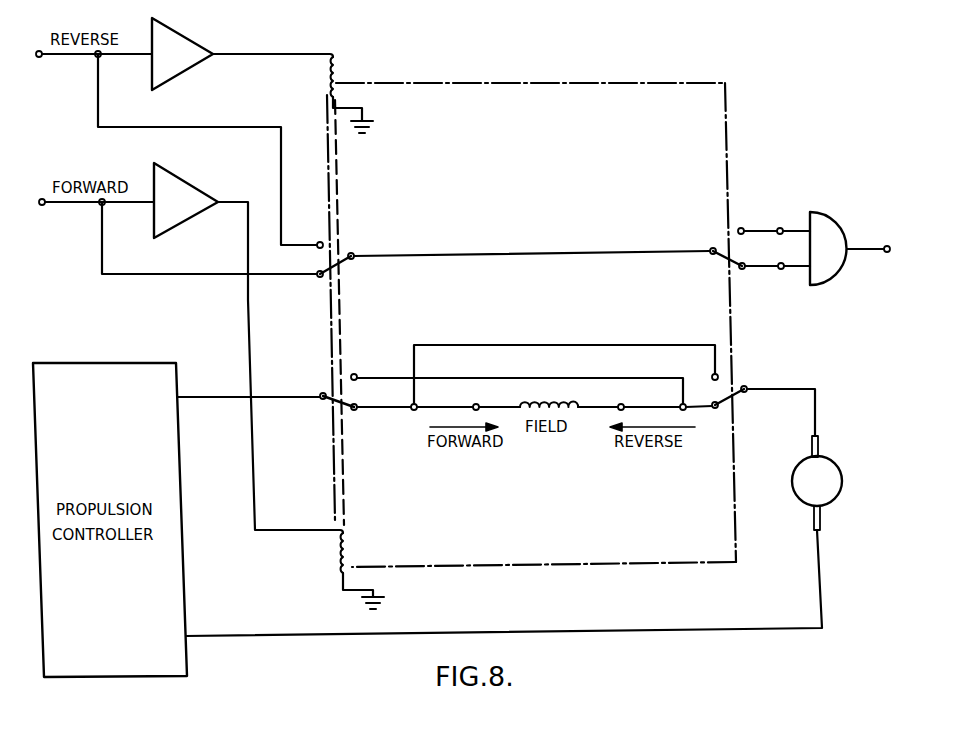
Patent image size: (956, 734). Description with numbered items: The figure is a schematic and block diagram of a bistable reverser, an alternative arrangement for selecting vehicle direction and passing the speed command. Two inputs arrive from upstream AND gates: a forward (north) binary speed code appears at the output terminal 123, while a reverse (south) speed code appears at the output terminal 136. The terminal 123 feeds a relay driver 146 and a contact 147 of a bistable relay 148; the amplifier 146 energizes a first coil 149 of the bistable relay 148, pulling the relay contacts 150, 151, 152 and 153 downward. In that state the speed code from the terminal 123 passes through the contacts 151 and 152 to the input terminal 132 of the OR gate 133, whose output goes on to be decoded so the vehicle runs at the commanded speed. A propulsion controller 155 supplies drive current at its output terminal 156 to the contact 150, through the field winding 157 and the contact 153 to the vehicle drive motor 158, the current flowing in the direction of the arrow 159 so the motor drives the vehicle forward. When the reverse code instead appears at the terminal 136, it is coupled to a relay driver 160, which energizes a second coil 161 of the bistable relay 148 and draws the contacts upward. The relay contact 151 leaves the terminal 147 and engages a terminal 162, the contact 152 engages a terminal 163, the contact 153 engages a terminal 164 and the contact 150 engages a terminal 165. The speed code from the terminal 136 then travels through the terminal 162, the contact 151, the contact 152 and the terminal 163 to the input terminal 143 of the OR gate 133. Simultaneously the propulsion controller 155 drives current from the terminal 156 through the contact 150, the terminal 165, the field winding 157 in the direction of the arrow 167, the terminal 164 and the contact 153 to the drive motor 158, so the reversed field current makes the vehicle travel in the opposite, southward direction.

The output terminal 136 is at (39, 57).
The relay driver 160 is at (172, 31).
The second coil 161 is at (338, 77).
The relay driver 146 is at (191, 184).
The output terminal 123 is at (43, 206).
The terminal 162 is at (318, 242).
The contact 147 is at (317, 282).
The relay contact 151 is at (353, 261).
The bistable relay 148 is at (432, 305).
The relay contact 152 is at (722, 268).
The terminal 163 is at (741, 228).
The input terminal 143 is at (782, 228).
The input terminal 132 is at (780, 269).
The OR gate 133 is at (841, 228).
The propulsion controller 155 is at (86, 363).
The output terminal 156 is at (321, 393).
The relay contact 150 is at (330, 403).
The terminal 165 is at (356, 374).
The terminal 164 is at (712, 374).
The field winding 157 is at (526, 399).
The relay contact 153 is at (738, 399).
The arrow 159 is at (427, 428).
The arrow 167 is at (696, 428).
The drive motor 158 is at (838, 470).
The first coil 149 is at (348, 551).